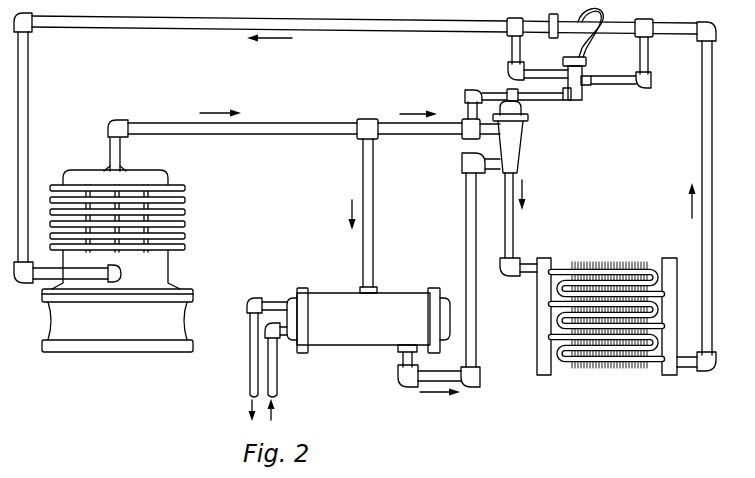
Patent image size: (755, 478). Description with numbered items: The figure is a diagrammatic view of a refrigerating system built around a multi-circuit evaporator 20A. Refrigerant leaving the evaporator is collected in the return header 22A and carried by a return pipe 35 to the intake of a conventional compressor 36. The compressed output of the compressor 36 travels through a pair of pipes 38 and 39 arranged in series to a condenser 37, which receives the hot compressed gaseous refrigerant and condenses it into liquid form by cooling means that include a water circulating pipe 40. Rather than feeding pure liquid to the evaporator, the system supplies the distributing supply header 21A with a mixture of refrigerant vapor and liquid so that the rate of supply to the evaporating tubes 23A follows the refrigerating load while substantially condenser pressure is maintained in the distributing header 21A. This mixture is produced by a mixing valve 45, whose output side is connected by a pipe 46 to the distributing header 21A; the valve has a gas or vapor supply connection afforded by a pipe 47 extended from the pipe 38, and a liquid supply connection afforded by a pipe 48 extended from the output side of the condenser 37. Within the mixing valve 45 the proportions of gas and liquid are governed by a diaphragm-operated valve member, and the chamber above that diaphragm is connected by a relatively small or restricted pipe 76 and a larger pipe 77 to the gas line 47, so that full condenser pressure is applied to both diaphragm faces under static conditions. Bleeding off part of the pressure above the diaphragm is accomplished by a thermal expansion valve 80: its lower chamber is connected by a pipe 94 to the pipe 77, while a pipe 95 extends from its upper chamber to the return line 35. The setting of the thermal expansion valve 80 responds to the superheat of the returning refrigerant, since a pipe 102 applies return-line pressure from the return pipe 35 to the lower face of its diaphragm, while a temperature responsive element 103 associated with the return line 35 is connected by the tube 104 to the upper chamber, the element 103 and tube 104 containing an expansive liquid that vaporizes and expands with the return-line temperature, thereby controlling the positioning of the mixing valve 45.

The multi-circuit evaporator 20A is at (590, 323).
The distributing supply header 21A is at (541, 372).
The return header 22A is at (668, 377).
The evaporating tubes 23A is at (570, 364).
The return pipe 35 is at (388, 28).
The compressor 36 is at (190, 238).
The condenser 37 is at (386, 297).
The pipe 38 is at (265, 135).
The pipe 39 is at (362, 186).
The water circulating pipe 40 is at (268, 380).
The mixing valve 45 is at (520, 140).
The pipe 46 is at (514, 228).
The pipe 47 is at (441, 137).
The pipe 48 is at (465, 203).
The restricted pipe 76 is at (467, 97).
The pipe 77 is at (518, 102).
The thermal expansion valve 80 is at (588, 71).
The pipe 94 is at (556, 100).
The pipe 95 is at (650, 70).
The pipe 102 is at (511, 60).
The temperature responsive element 103 is at (553, 38).
The tube 104 is at (590, 36).